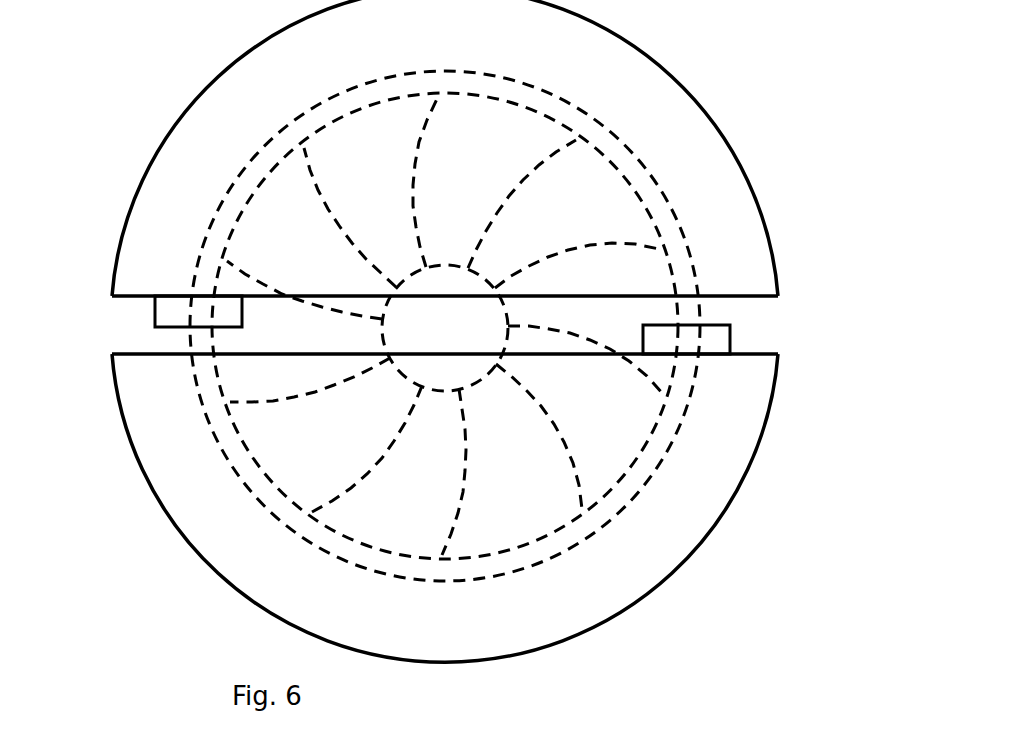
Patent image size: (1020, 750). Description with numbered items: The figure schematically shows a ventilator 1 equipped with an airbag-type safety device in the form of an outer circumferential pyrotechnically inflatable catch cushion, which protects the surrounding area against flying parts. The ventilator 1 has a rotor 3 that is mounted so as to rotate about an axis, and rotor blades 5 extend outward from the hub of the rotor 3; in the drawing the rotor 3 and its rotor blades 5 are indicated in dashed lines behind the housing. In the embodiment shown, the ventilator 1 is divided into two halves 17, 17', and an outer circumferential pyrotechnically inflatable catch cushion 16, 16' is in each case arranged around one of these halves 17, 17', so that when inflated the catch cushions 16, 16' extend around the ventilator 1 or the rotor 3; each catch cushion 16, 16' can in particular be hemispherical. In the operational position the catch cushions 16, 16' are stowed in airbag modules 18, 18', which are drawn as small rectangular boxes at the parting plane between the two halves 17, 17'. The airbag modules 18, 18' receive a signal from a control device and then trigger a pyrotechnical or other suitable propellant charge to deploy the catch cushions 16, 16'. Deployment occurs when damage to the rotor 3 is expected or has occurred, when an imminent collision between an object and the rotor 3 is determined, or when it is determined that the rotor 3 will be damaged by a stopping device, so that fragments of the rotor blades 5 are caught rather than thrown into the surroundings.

The ventilator 1 is at (99, 54).
The rotor 3 is at (610, 250).
The rotor blades 5 is at (263, 234).
The outer circumferential pyrotechnically inflatable catch cushion 16 is at (472, 148).
The outer circumferential pyrotechnically inflatable catch cushion 16' is at (477, 508).
The half of the ventilator 17 is at (506, 239).
The half of the ventilator 17' is at (506, 426).
The airbag module 18 is at (134, 337).
The airbag module 18' is at (765, 359).